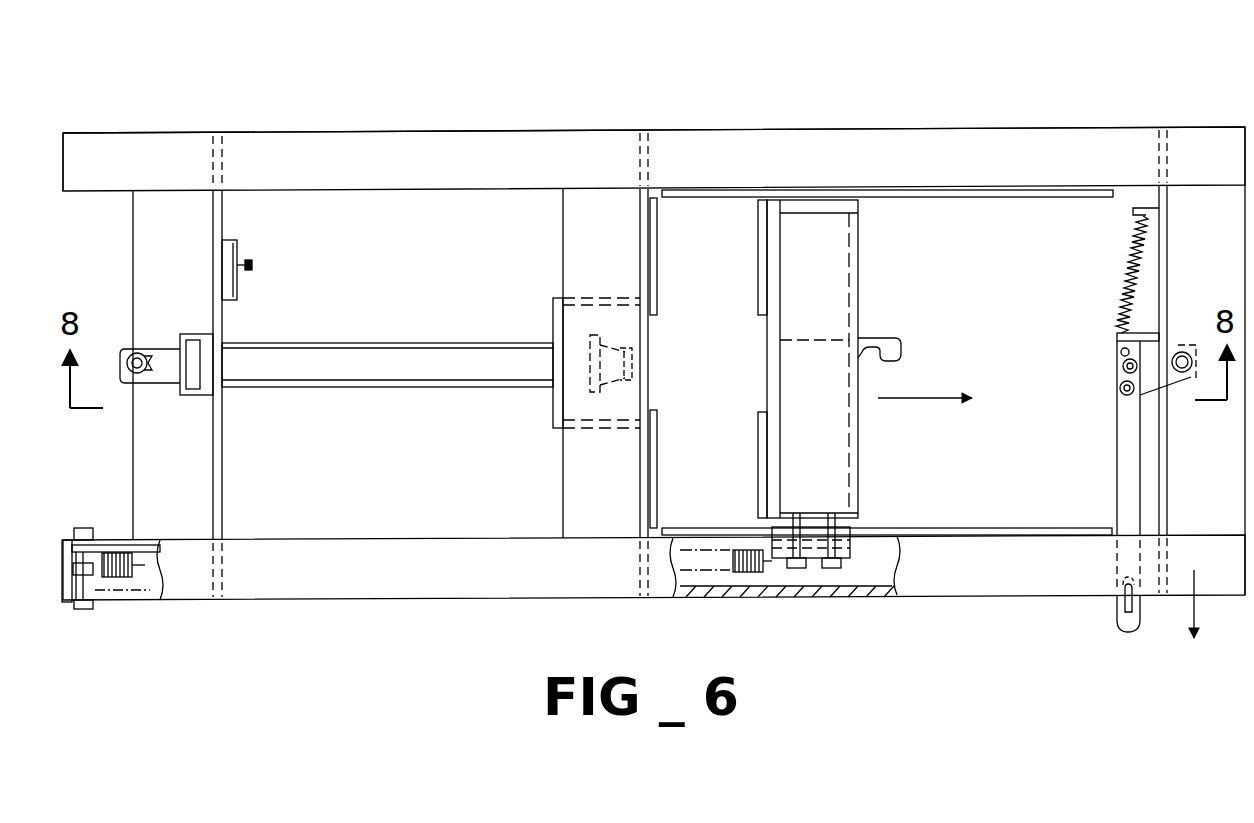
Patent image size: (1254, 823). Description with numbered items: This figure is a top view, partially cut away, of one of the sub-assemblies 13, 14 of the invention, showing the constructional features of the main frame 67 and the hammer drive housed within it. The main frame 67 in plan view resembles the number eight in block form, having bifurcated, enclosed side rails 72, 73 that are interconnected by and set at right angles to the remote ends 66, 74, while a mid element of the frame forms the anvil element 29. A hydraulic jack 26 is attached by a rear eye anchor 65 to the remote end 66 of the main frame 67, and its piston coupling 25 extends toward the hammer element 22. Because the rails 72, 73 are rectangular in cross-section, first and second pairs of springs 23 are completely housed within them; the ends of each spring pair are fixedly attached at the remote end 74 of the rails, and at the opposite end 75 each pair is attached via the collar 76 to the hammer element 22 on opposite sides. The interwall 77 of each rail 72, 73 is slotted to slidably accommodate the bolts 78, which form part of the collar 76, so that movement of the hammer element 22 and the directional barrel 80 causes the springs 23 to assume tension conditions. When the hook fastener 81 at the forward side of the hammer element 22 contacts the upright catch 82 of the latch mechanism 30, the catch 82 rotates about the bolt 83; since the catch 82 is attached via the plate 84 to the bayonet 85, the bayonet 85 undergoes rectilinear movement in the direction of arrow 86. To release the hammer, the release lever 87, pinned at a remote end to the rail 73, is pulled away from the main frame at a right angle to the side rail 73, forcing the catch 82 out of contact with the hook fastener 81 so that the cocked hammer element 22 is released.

The sub-assembly 13 is at (257, 121).
The sub-assembly 14 is at (654, 116).
The hammer element 22 is at (862, 259).
The springs 23 is at (745, 574).
The piston rod coupling 25 is at (651, 343).
The hydraulic jack 26 is at (384, 340).
The anvil element 29 is at (658, 252).
The latch mechanism 30 is at (1112, 365).
The rear eye anchor 65 is at (141, 378).
The remote end 66 is at (133, 268).
The main frame 67 is at (513, 132).
The side rail 72 is at (681, 131).
The side rail 73 is at (522, 600).
The remote end 74 is at (97, 133).
The opposite end 75 is at (772, 560).
The collar 76 is at (850, 560).
The interwall 77 is at (966, 185).
The bolts 78 is at (834, 512).
The directional barrel 80 is at (925, 398).
The hook fastener 81 is at (890, 338).
The upright catch 82 is at (1116, 348).
The bolt 83 is at (1183, 373).
The plate 84 is at (1148, 363).
The bayonet 85 is at (1117, 484).
The arrow 86 is at (1196, 576).
The release lever 87 is at (1116, 617).